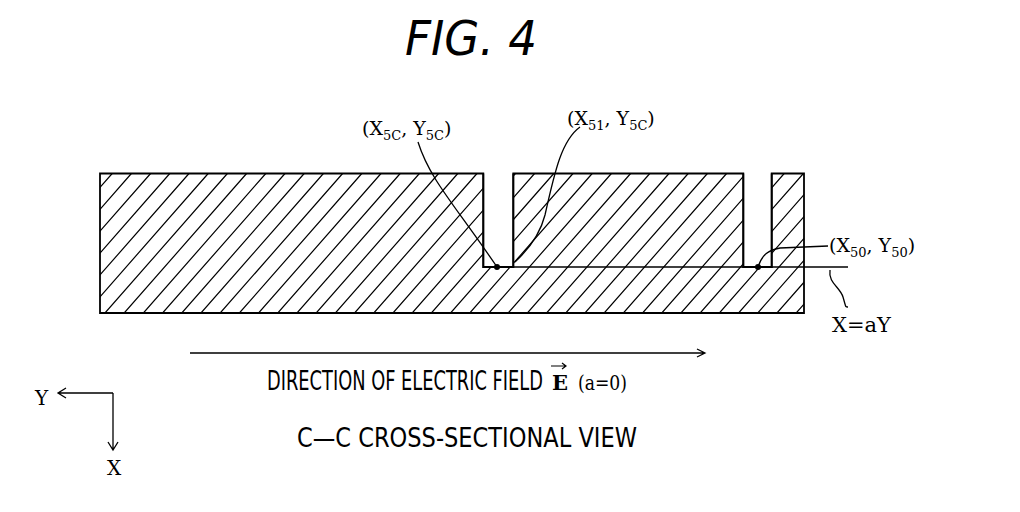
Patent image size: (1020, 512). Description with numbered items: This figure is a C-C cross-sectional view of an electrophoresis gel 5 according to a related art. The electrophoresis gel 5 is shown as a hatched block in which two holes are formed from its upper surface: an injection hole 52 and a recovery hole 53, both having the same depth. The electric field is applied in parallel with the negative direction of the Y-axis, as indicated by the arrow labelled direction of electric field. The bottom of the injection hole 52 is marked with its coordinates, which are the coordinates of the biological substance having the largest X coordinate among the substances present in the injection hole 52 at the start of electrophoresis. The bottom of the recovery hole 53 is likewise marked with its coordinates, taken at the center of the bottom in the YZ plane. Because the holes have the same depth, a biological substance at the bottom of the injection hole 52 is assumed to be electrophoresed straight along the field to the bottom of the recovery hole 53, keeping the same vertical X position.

The electrophoresis gel 5 is at (100, 282).
The injection hole 52 is at (755, 183).
The recovery hole 53 is at (495, 183).